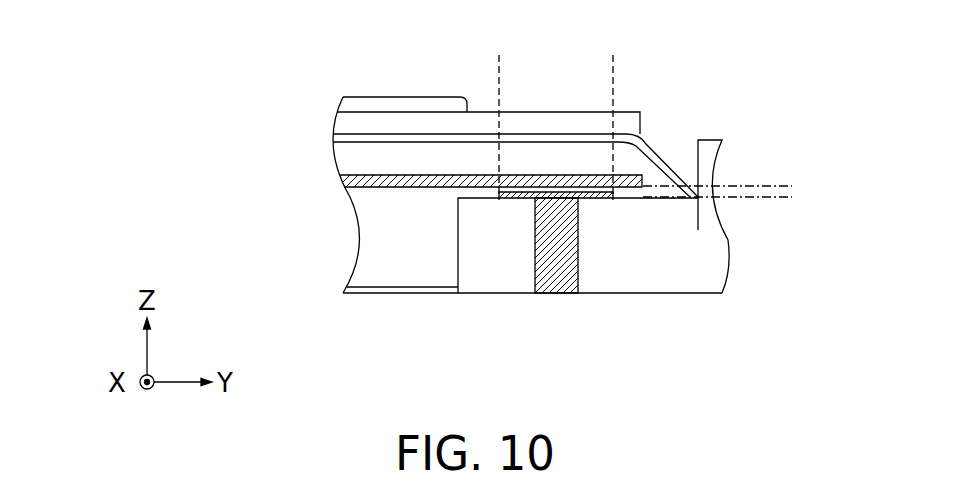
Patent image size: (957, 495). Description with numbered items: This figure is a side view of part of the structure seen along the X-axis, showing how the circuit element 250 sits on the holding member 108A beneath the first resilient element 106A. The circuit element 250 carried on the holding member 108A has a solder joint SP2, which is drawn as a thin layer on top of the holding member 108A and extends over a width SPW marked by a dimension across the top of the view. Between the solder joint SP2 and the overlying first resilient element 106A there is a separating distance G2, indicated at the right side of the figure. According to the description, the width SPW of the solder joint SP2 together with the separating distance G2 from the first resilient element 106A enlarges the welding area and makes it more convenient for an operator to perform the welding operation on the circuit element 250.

The first resilient element 106A is at (348, 181).
The holding member 108A is at (664, 275).
The circuit element 250 is at (557, 282).
The solder joint SP2 is at (600, 199).
The width SPW is at (499, 60).
The separating distance G2 is at (783, 145).